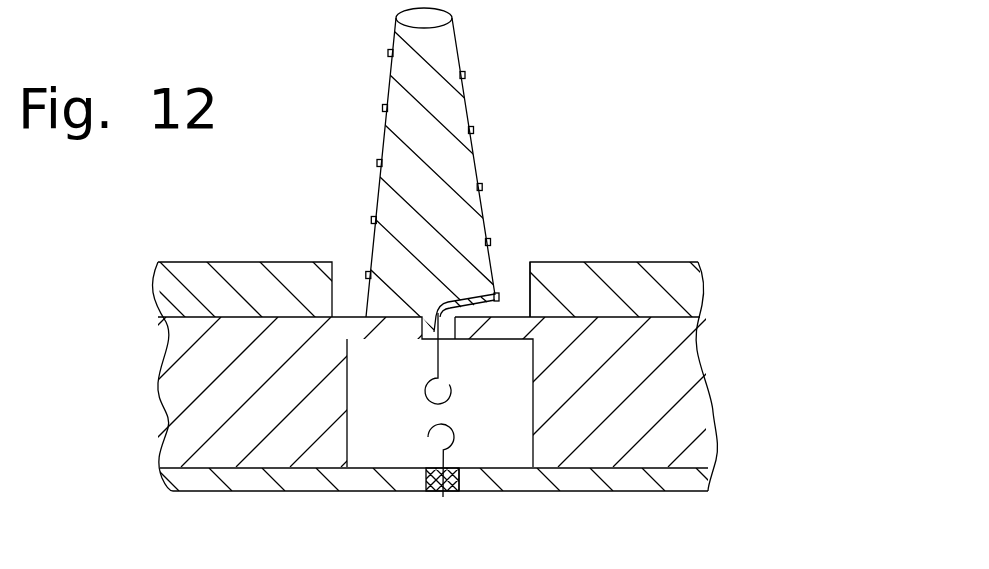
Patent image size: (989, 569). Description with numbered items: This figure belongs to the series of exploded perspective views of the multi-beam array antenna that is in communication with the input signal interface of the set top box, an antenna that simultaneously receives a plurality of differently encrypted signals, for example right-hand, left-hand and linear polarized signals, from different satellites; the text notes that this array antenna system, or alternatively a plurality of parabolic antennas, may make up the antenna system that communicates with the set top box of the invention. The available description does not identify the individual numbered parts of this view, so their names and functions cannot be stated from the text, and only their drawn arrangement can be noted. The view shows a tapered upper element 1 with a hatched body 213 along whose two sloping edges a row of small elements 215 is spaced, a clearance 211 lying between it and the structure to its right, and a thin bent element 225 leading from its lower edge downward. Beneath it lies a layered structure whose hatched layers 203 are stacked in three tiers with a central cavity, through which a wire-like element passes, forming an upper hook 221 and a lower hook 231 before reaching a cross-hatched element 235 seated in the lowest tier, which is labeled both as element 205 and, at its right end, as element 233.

The electronic component 1 is at (433, 197).
The tapered component body 213 is at (437, 131).
The solder bumps 215 is at (473, 132).
The gap between component and substrate 211 is at (508, 275).
The component lead 225 is at (427, 318).
The substrate layers 203 is at (637, 282).
The upper hook of contact wire 221 is at (426, 400).
The lower hook of contact wire 231 is at (458, 437).
The solder pad 235 is at (435, 492).
The bottom conductor layer 205 is at (476, 464).
The bottom substrate layer 233 is at (692, 467).